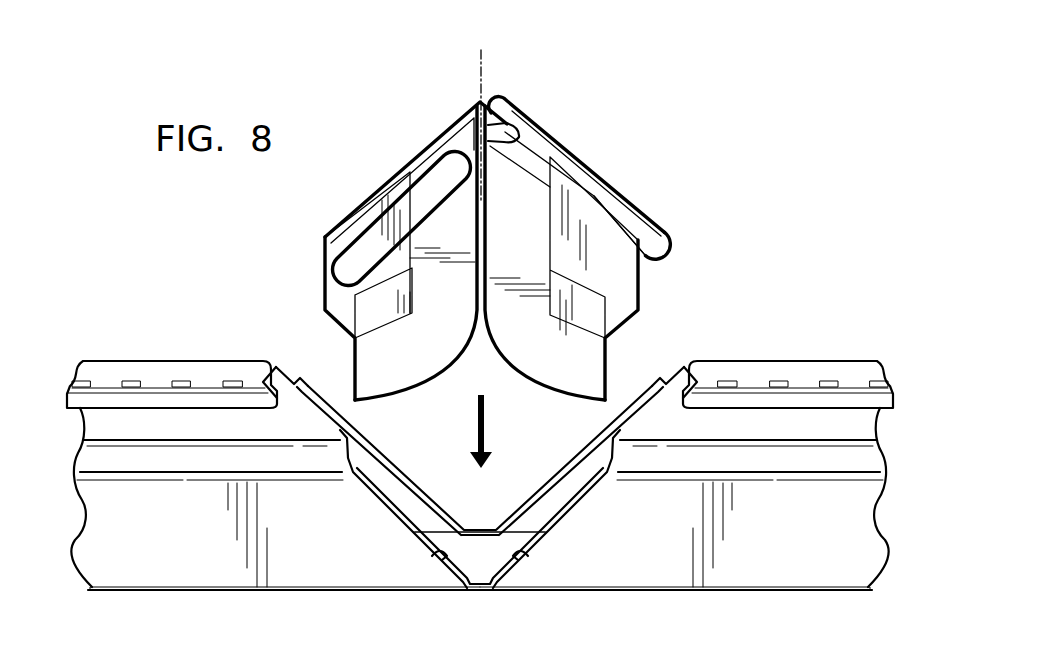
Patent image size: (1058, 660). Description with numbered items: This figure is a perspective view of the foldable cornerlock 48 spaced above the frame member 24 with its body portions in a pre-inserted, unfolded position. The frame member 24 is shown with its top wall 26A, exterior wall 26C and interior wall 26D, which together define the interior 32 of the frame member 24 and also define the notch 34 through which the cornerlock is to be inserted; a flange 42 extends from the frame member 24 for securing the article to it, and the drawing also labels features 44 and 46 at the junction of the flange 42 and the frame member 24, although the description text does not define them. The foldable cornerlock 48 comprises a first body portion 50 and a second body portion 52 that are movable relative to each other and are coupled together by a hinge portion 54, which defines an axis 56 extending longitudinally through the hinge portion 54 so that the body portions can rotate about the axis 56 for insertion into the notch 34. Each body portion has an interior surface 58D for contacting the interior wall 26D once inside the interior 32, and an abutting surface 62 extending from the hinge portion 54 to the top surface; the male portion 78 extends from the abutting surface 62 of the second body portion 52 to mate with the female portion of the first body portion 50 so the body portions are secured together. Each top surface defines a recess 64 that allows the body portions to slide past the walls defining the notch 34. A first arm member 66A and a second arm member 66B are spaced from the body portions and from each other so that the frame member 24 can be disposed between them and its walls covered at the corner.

The frame member 24 is at (757, 560).
The top wall 26A is at (130, 458).
The exterior wall 26C is at (407, 477).
The interior wall 26D is at (442, 557).
The interior 32 is at (414, 519).
The notch 34 is at (497, 428).
The flange 42 is at (66, 372).
The panel hem 44 is at (299, 383).
The clip 46 is at (284, 378).
The foldable cornerlock 48 is at (503, 216).
The first body portion 50 is at (523, 220).
The second body portion 52 is at (422, 287).
The hinge portion 54 is at (488, 121).
The axis 56 is at (470, 74).
The interior surface 58D is at (392, 364).
The abutting surface 62 is at (452, 128).
The recess 64 is at (376, 308).
The first arm member 66A is at (655, 245).
The second arm member 66B is at (365, 248).
The male portion 78 is at (540, 157).